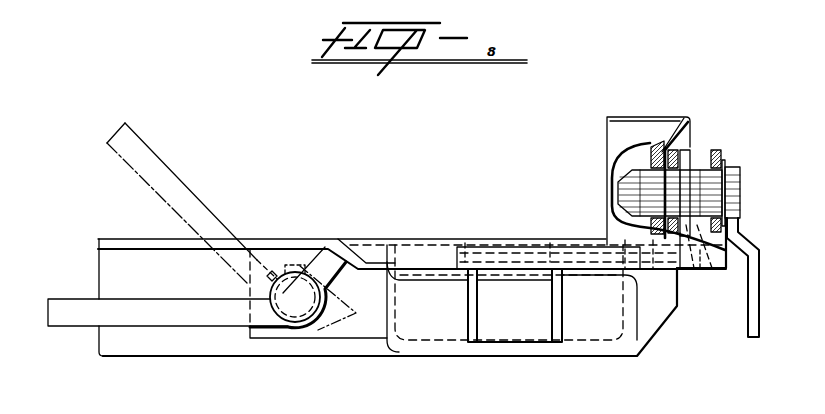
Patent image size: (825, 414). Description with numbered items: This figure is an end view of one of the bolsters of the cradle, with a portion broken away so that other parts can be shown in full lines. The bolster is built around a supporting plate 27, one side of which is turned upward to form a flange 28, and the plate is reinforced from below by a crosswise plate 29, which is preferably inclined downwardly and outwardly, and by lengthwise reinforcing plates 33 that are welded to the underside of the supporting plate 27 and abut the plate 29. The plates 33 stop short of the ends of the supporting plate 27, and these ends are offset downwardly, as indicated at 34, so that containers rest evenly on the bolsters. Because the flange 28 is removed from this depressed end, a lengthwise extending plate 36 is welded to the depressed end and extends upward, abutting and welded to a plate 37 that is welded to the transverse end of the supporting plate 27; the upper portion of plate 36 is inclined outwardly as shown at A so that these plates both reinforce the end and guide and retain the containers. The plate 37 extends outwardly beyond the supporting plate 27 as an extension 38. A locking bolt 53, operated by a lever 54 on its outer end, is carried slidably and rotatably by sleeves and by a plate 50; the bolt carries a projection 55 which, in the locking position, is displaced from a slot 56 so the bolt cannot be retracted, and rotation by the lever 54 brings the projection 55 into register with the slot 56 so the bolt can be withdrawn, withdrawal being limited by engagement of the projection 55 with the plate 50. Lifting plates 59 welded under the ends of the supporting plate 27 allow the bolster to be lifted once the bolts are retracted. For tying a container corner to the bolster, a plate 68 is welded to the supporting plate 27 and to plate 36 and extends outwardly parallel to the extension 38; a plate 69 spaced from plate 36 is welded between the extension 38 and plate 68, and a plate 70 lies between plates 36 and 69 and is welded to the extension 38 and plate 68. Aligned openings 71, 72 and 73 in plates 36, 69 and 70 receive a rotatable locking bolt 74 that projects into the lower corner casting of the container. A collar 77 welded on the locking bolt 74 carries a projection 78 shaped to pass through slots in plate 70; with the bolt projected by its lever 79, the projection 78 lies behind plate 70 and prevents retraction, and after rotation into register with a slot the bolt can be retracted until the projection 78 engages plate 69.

The supporting plate 27 is at (483, 237).
The flange 28 is at (700, 266).
The reinforcing plate 29 is at (523, 351).
The reinforcing plates 33 is at (395, 306).
The downwardly offset end 34 is at (362, 259).
The lengthwise extending plate 36 is at (670, 132).
The plate 37 is at (606, 138).
The extension 38 is at (725, 270).
The plate 50 is at (287, 334).
The locking bolt 53 is at (280, 295).
The lever 54 is at (120, 304).
The projection 55 is at (272, 271).
The slot 56 is at (295, 264).
The lifting plates 59 is at (557, 320).
The plate 68 is at (720, 240).
The plate 69 is at (714, 152).
The plate 70 is at (679, 152).
The opening 71 is at (647, 167).
The opening 72 is at (735, 170).
The opening 73 is at (685, 155).
The rotatable locking bolt 74 is at (745, 195).
The collar 77 is at (672, 235).
The projection 78 is at (652, 143).
The lever 79 is at (755, 298).
The outwardly inclined upper portion A is at (623, 118).